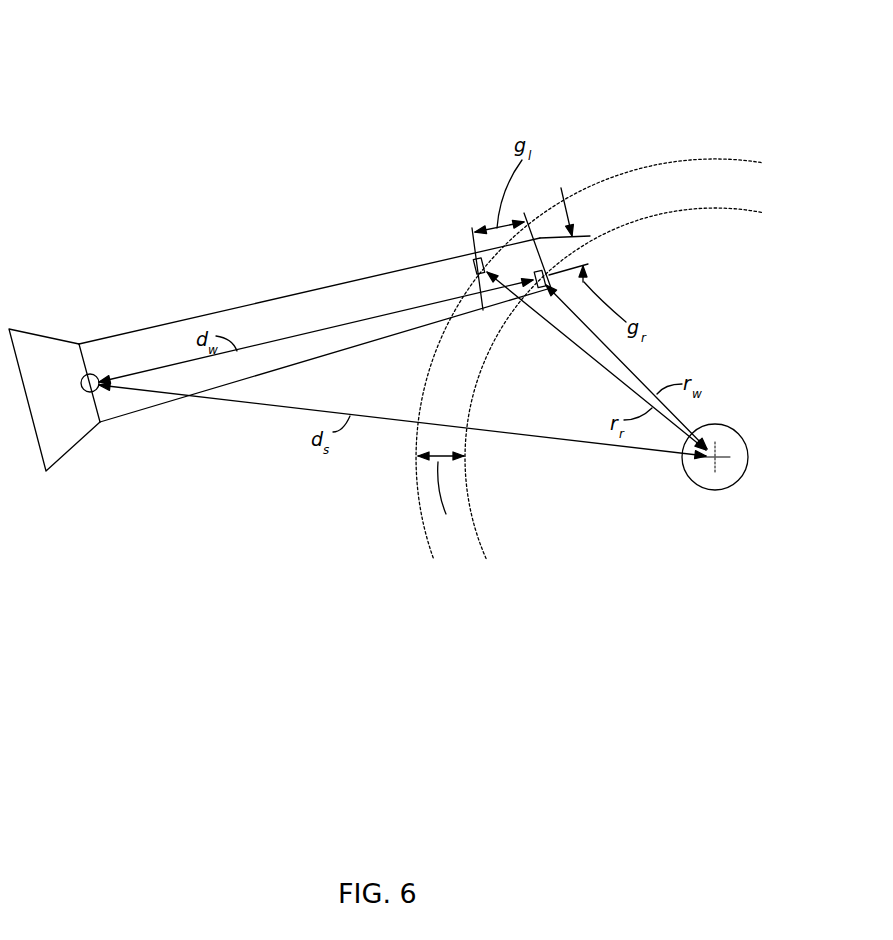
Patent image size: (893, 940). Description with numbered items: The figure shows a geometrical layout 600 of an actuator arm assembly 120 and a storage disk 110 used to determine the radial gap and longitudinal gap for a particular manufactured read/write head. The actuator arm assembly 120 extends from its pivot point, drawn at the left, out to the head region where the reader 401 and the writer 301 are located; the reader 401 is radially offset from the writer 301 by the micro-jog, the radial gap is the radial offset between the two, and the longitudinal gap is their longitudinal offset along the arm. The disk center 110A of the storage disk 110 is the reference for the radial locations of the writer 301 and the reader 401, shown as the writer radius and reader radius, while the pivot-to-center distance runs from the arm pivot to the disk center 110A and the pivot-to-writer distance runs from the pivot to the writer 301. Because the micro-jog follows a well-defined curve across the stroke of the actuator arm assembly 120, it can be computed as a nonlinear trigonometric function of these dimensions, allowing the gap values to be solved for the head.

The geometrical layout 600 is at (110, 50).
The actuator arm assembly 120 is at (283, 298).
The reader 401 is at (473, 266).
The writer 301 is at (541, 290).
The storage disk 110 is at (589, 359).
The disk center 110A is at (726, 467).